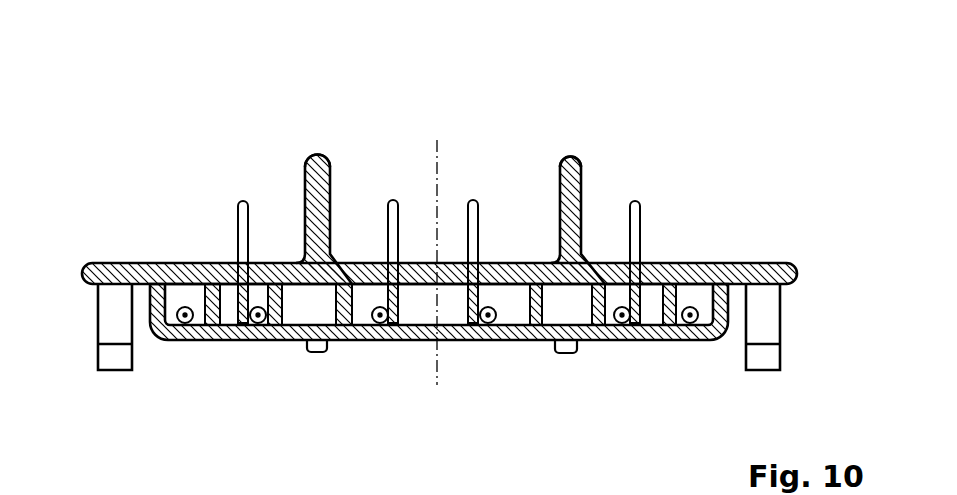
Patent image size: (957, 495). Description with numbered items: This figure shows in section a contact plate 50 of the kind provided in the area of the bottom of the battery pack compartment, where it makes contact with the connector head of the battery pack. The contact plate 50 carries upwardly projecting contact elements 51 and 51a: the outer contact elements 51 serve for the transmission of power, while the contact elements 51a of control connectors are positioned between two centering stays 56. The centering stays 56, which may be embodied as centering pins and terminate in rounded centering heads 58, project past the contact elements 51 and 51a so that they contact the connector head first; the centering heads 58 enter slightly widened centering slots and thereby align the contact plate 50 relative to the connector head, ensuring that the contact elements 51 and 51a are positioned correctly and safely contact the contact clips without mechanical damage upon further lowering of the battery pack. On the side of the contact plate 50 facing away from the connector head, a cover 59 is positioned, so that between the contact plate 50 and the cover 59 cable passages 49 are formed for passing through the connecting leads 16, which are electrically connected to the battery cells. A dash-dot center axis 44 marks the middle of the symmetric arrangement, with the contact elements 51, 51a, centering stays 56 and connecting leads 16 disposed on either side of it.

The contact plate 50 is at (767, 260).
The cover 59 is at (406, 342).
The cable passages 49 is at (308, 310).
The centering stays 56 is at (305, 168).
The centering heads 58 is at (317, 156).
The contact elements 51 is at (237, 203).
The contact elements of control connectors 51a is at (392, 200).
The connecting leads 16 is at (238, 342).
The center axis 44 is at (438, 138).